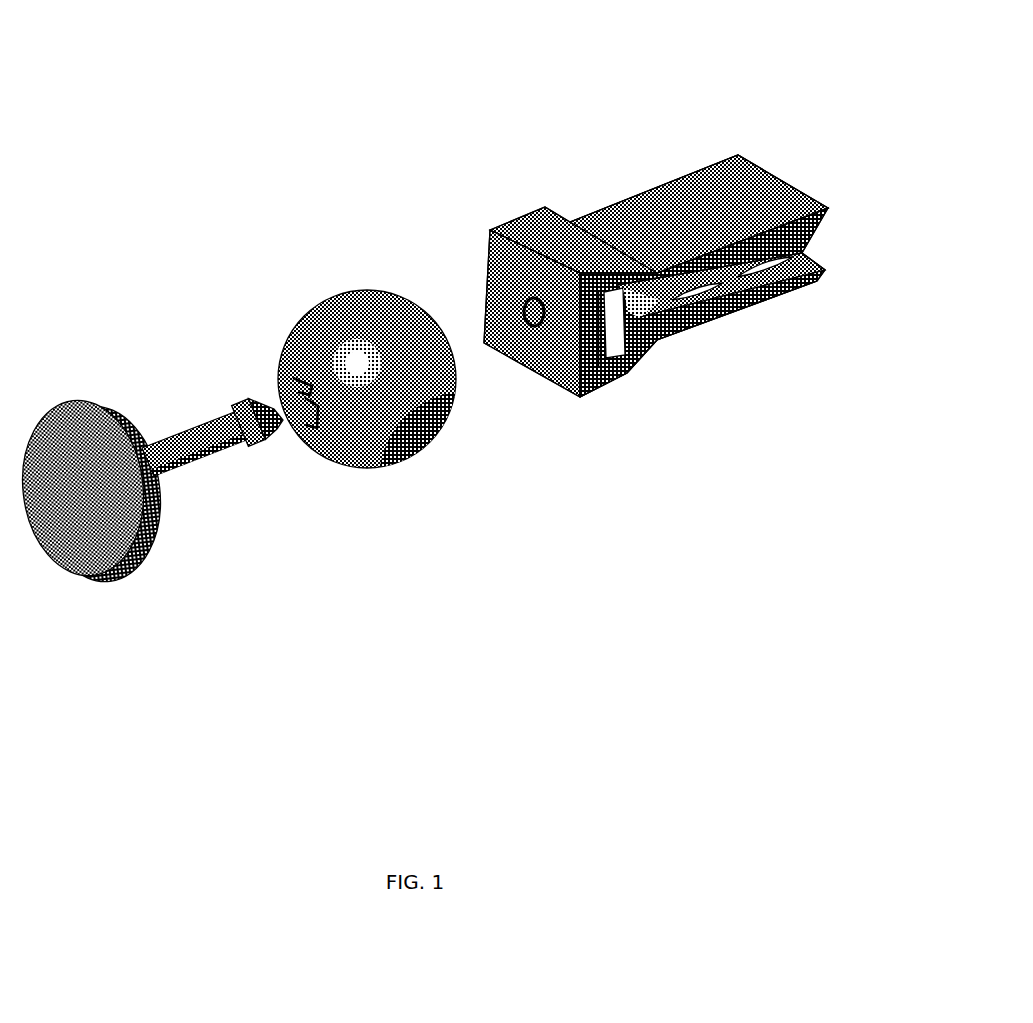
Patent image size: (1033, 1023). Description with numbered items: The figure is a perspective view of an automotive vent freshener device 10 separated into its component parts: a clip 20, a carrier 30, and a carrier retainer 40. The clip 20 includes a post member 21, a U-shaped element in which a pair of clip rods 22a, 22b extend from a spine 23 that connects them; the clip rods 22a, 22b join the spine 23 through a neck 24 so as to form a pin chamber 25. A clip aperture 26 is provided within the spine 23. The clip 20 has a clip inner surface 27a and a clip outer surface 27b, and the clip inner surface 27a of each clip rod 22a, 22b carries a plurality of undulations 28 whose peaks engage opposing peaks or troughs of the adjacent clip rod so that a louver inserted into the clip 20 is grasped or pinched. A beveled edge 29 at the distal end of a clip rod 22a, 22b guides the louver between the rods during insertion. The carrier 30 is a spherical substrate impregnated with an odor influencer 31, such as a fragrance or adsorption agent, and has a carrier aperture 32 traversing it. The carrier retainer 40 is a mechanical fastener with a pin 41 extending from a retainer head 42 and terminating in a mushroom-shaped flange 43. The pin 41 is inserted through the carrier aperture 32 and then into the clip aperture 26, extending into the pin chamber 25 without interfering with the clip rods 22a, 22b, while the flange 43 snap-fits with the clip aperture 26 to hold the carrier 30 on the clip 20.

The device 10 is at (229, 93).
The clip 20 is at (690, 490).
The post member 21 is at (737, 127).
The clip rod 22a is at (710, 176).
The clip rod 22b is at (748, 300).
The spine 23 is at (525, 278).
The neck 24 is at (629, 292).
The pin chamber 25 is at (592, 393).
The clip aperture 26 is at (525, 300).
The clip inner surface 27a is at (773, 292).
The clip outer surface 27b is at (643, 207).
The undulations 28 is at (728, 278).
The beveled edge 29 is at (802, 253).
The carrier 30 is at (430, 520).
The odor influencer 31 is at (370, 344).
The carrier aperture 32 is at (286, 370).
The carrier retainer 40 is at (224, 567).
The pin 41 is at (193, 432).
The retainer head 42 is at (82, 508).
The flange 43 is at (238, 404).